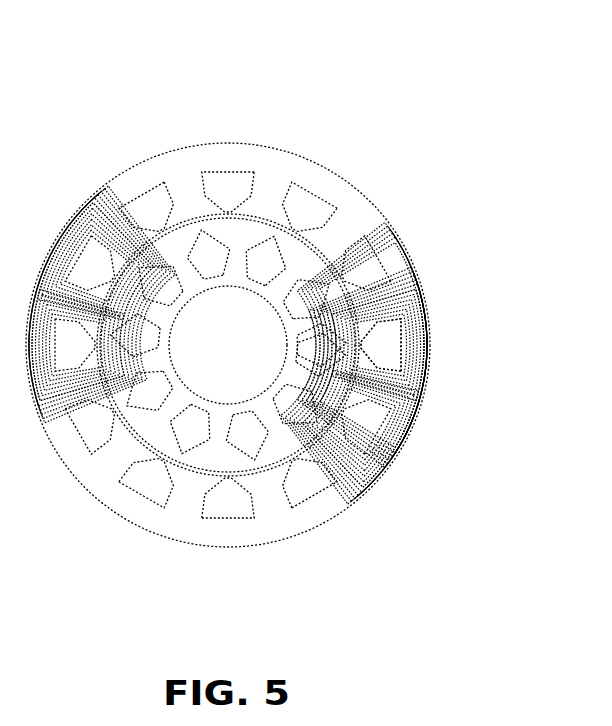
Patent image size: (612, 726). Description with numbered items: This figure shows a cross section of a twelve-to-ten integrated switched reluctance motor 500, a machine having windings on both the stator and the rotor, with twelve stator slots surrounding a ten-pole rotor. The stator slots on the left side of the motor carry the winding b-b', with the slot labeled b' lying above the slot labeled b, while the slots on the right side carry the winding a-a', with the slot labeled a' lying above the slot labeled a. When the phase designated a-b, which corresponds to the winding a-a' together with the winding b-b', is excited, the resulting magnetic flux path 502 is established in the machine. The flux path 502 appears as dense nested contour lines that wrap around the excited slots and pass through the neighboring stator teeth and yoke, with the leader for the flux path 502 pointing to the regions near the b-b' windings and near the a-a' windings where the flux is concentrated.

The 12:10 ISRM 500 is at (268, 290).
The flux path 502 is at (326, 384).
The winding a is at (360, 421).
The winding a' is at (381, 345).
The winding b is at (75, 345).
The winding b' is at (95, 268).